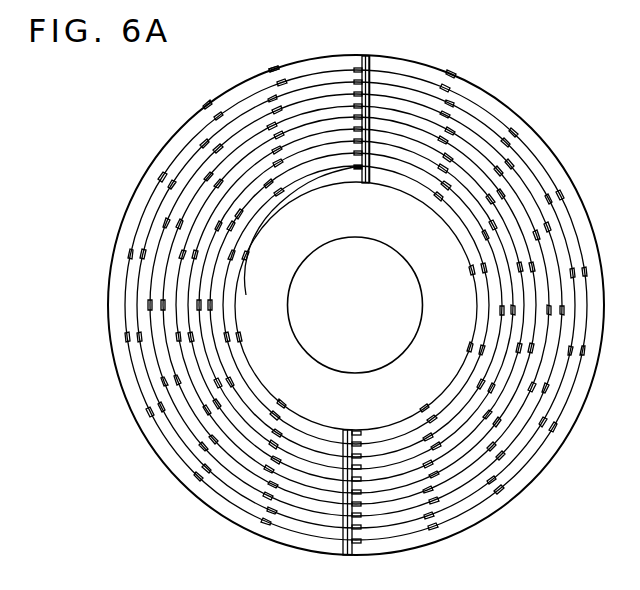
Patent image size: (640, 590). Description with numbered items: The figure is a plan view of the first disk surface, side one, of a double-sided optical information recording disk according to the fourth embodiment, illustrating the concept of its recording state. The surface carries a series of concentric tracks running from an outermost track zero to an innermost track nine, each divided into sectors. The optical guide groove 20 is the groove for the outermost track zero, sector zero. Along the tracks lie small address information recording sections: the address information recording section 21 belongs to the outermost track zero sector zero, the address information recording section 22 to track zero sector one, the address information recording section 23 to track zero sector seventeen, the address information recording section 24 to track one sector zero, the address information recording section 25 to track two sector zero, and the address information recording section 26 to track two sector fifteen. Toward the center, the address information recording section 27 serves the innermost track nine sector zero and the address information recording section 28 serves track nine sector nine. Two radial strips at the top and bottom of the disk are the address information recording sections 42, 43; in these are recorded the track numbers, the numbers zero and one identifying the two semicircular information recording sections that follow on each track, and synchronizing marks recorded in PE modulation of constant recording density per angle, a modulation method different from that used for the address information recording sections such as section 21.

The optical guide groove 20 is at (312, 57).
The address information recording section 21 is at (367, 57).
The address information recording section 22 is at (275, 71).
The address information recording section 23 is at (450, 88).
The address information recording section 24 is at (355, 70).
The address information recording section 25 is at (354, 82).
The address information recording section 26 is at (453, 112).
The address information recording section 27 is at (352, 167).
The address information recording section 28 is at (436, 208).
The address information recording section 42 is at (378, 58).
The address information recording section 43 is at (342, 541).